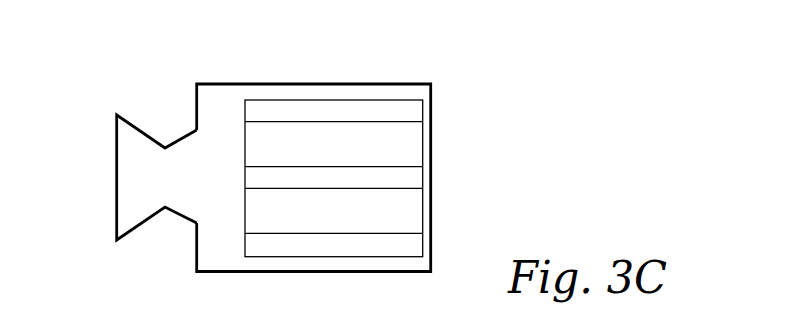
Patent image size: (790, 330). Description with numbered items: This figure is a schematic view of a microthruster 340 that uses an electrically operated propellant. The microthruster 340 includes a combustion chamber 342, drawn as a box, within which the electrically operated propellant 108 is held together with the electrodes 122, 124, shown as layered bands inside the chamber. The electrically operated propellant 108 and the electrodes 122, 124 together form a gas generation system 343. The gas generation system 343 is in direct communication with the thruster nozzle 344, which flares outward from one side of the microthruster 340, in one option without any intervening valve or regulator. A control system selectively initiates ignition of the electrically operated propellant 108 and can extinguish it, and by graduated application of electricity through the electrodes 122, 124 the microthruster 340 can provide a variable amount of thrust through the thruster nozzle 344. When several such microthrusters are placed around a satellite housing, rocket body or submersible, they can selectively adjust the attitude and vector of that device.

The microthruster 340 is at (387, 83).
The combustion chamber 342 is at (292, 100).
The thruster nozzle 344 is at (128, 178).
The electrode 122 is at (413, 112).
The gas generation system 343 is at (414, 140).
The electrically operated propellant 108 is at (408, 157).
The electrode 124 is at (405, 178).